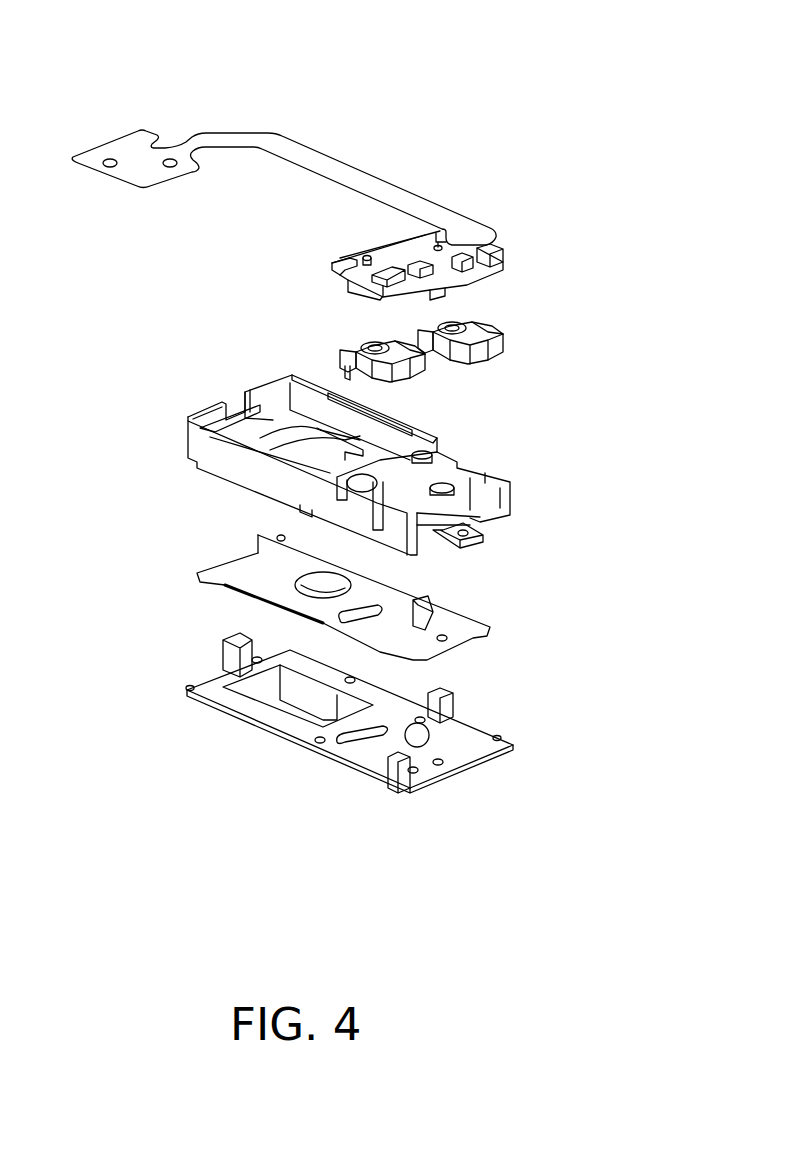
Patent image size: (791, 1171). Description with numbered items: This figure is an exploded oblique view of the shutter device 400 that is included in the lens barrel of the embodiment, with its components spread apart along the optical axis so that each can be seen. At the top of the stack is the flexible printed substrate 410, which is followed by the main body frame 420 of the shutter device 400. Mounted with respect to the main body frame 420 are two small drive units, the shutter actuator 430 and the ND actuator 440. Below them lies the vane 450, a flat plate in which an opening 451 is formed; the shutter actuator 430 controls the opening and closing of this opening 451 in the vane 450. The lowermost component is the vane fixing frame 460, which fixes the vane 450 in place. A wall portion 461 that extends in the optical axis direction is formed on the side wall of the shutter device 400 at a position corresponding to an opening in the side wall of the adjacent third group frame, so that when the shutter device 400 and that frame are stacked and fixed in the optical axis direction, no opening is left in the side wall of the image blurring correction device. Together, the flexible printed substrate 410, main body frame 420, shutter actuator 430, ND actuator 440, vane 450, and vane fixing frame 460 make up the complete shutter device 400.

The shutter device 400 is at (66, 62).
The flexible printed substrate 410 is at (332, 172).
The main body frame 420 is at (207, 450).
The shutter actuator 430 is at (408, 363).
The ND actuator 440 is at (490, 345).
The vane 450 is at (257, 580).
The opening 451 is at (257, 566).
The vane fixing frame 460 is at (227, 700).
The wall portion 461 is at (310, 700).